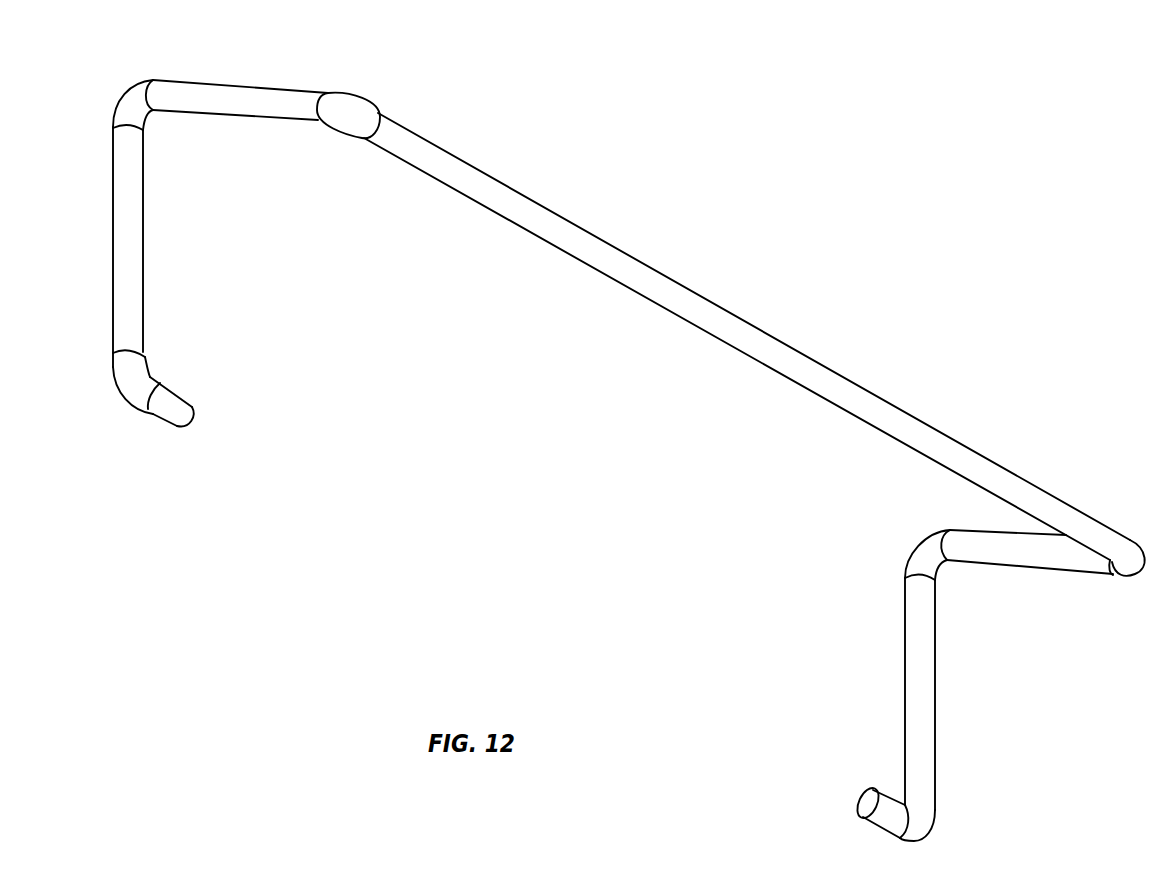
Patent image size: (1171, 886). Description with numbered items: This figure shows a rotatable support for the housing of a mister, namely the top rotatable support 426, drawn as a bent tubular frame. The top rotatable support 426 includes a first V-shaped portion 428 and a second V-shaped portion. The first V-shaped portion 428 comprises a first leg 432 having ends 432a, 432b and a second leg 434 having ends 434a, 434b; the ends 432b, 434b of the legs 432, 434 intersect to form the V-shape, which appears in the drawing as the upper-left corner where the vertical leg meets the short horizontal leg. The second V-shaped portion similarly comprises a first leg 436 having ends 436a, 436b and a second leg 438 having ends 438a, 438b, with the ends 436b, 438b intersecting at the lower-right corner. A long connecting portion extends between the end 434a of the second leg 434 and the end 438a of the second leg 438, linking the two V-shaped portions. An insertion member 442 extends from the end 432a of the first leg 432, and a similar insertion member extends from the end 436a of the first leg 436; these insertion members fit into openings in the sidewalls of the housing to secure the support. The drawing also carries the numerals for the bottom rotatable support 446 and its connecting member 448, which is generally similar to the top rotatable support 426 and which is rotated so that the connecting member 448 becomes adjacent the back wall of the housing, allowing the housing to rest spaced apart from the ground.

The top rotatable support 426 is at (680, 148).
The first V-shaped portion 428 is at (114, 250).
The first leg 432 is at (115, 200).
The end of first leg 432a is at (113, 353).
The end of first leg 432b is at (112, 128).
The second leg 434 is at (277, 88).
The end of second leg 434a is at (328, 93).
The end of second leg 434b is at (155, 80).
The first leg 436 is at (935, 778).
The end of first leg 436a is at (905, 805).
The end of first leg 436b is at (907, 578).
The second leg 438 is at (1040, 557).
The end of second leg 438a is at (1113, 575).
The end of second leg 438b is at (948, 528).
The insertion member 442 is at (183, 427).
The bottom rotatable support 446 is at (876, 829).
The connecting member 448 is at (698, 294).